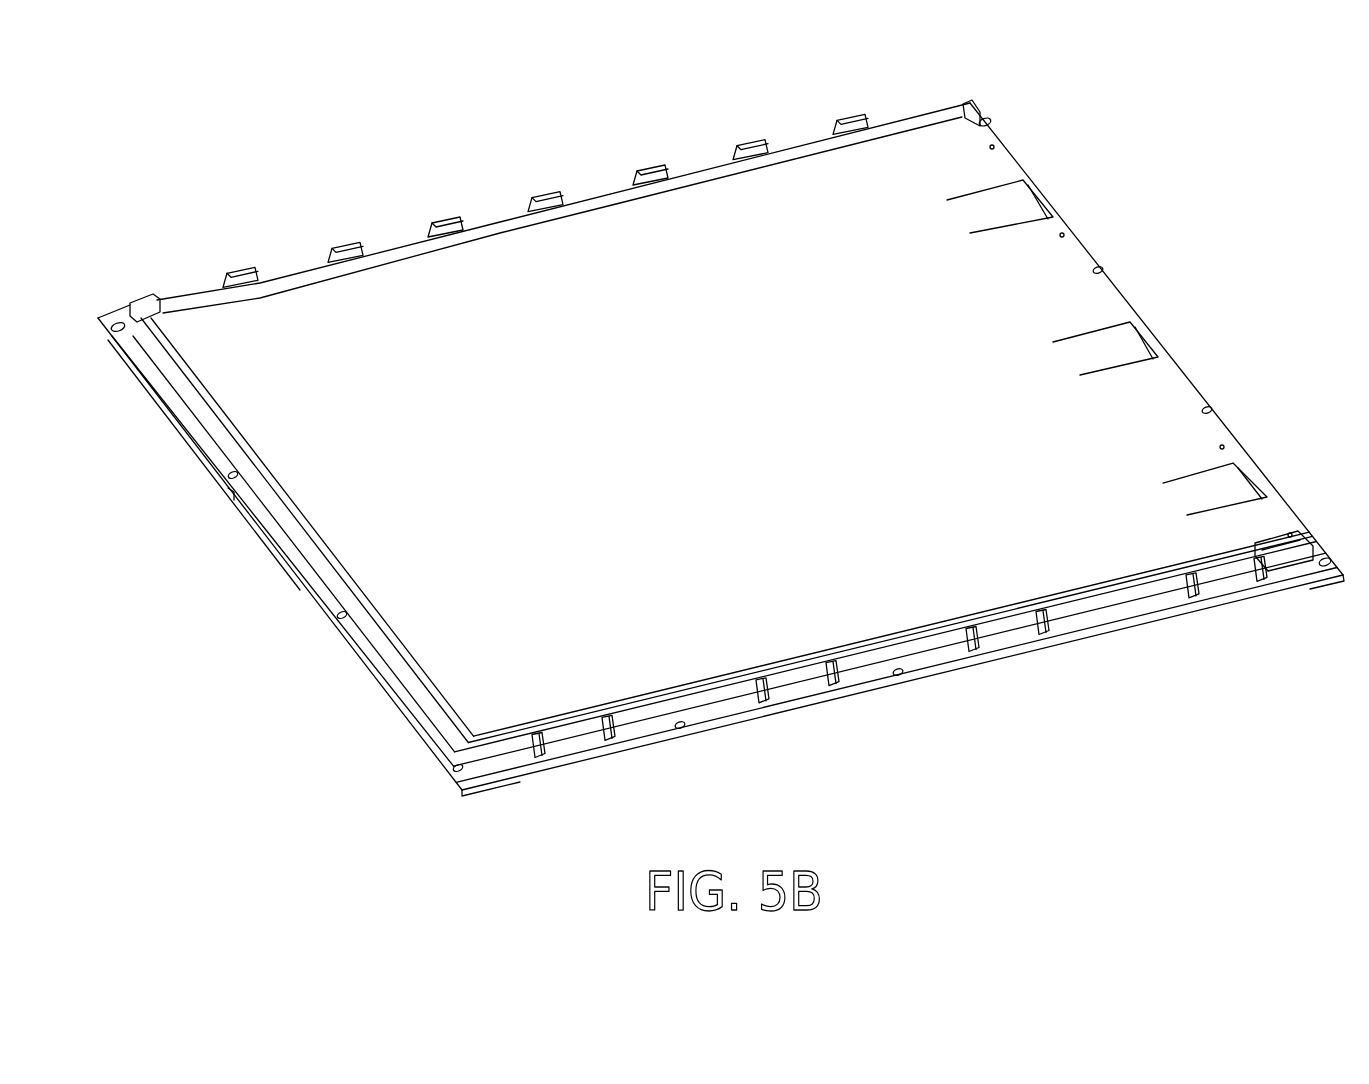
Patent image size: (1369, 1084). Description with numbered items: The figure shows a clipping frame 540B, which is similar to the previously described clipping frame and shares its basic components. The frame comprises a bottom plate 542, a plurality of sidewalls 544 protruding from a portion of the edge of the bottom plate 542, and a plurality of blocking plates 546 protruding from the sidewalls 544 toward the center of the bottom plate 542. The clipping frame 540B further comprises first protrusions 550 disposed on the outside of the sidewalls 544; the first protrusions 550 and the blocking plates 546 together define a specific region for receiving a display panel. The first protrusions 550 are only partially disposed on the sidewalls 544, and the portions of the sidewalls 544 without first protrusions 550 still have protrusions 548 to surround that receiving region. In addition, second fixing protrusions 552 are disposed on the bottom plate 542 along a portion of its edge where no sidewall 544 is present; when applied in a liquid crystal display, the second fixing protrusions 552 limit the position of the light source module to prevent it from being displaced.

The clipping frame 540B is at (1282, 806).
The bottom plate 542 is at (1162, 405).
The sidewalls 544 is at (318, 559).
The blocking plates 546 is at (598, 205).
The protrusions 548 is at (347, 567).
The first protrusions 550 is at (555, 192).
The second fixing protrusions 552 is at (1040, 192).